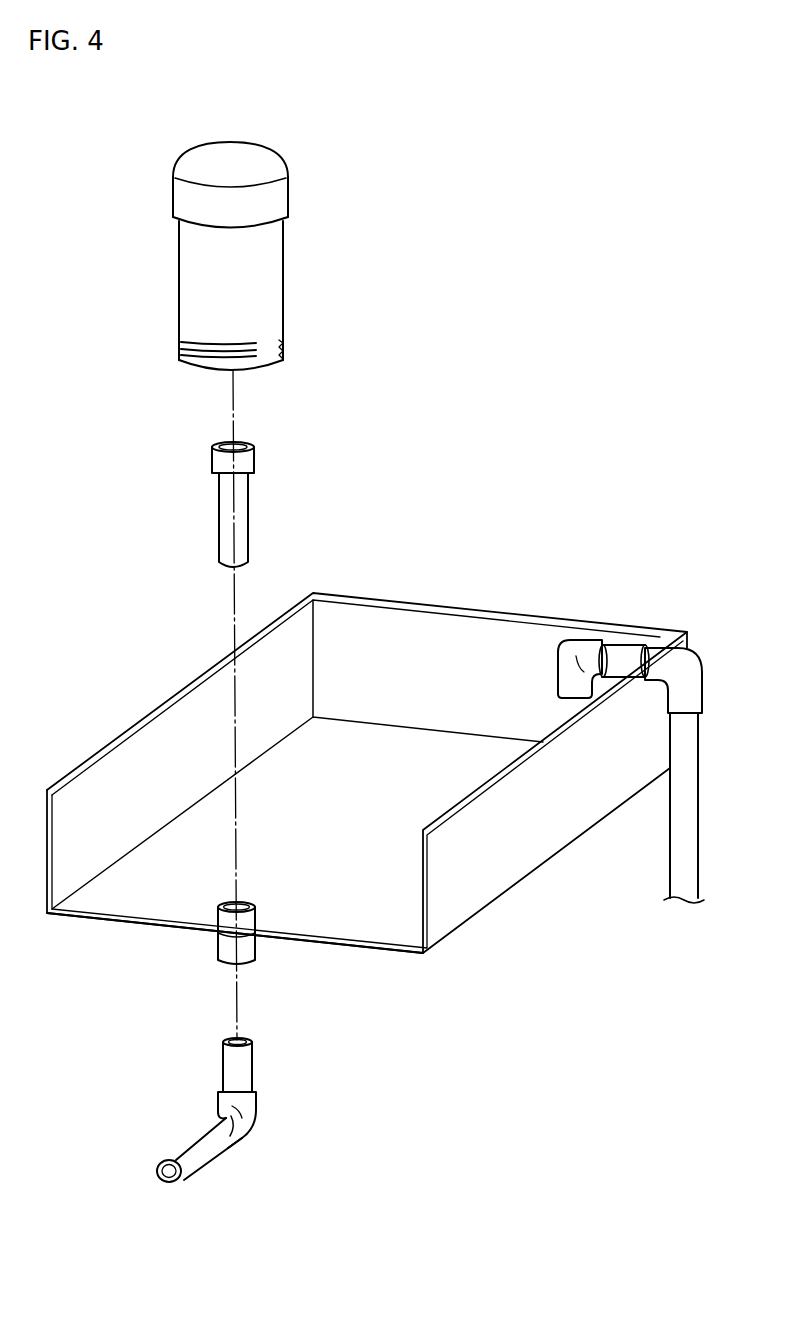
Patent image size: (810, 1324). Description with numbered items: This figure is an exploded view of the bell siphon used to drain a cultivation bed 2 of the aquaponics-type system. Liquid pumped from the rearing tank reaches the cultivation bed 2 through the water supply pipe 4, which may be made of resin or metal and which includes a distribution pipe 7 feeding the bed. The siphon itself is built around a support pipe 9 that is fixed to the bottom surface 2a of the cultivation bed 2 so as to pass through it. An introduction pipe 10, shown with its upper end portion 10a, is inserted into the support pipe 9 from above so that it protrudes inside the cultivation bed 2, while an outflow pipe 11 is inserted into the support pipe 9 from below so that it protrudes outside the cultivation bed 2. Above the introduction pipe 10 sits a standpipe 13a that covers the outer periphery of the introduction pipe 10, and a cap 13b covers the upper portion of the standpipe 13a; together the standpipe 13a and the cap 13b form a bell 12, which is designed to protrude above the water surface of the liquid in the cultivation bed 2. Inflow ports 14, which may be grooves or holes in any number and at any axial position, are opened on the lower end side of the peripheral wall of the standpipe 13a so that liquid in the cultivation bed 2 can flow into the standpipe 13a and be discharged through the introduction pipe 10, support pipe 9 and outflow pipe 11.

The cultivation bed 2 is at (493, 883).
The bottom surface 2a is at (157, 897).
The water supply pipe 4 is at (698, 831).
The distribution pipe 7 is at (630, 653).
The support pipe 9 is at (255, 955).
The introduction pipe 10 is at (267, 477).
The pipe collar 10a is at (242, 440).
The outflow pipe 11 is at (245, 1070).
The bell 12 is at (299, 256).
The standpipe 13a is at (279, 295).
The cap 13b is at (288, 190).
The inflow port 14 is at (178, 343).